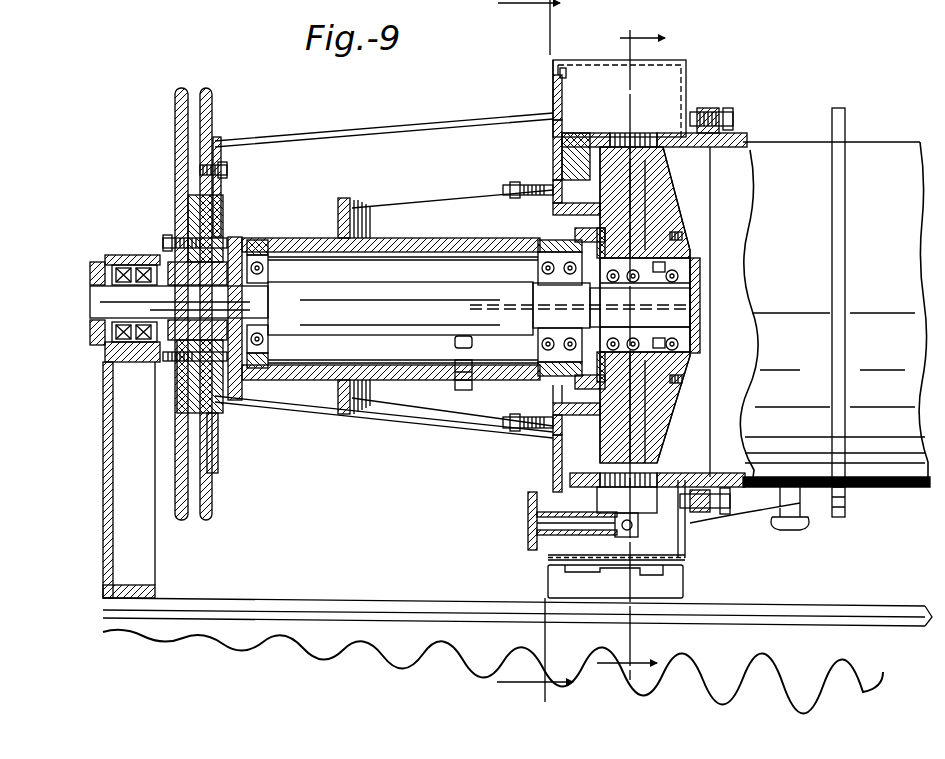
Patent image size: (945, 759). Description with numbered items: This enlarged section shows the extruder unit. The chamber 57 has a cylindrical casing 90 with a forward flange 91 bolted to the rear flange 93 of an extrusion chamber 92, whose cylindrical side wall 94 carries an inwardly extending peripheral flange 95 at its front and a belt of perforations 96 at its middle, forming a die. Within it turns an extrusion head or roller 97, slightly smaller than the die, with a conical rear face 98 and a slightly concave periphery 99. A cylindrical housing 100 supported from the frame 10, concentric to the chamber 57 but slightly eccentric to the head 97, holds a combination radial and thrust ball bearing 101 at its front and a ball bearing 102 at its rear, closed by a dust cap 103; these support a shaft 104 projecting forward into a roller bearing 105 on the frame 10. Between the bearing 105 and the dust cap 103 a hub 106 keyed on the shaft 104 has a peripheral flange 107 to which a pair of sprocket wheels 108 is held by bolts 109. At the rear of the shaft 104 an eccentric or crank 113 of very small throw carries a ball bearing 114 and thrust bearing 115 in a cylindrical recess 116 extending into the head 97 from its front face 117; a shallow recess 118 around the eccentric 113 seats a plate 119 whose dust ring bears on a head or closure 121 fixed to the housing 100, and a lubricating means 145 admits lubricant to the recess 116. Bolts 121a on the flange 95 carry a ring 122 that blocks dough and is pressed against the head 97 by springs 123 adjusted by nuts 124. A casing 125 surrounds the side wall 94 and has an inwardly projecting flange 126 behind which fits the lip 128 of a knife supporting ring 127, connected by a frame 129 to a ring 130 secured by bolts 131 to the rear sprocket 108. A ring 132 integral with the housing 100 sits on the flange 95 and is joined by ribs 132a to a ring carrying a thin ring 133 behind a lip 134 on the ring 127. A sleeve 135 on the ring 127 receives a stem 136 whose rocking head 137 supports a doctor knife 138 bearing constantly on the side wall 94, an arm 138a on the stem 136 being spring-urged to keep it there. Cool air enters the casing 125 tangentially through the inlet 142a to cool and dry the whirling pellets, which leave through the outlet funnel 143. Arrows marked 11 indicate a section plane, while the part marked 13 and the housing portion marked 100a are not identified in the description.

The frame 10 is at (243, 617).
The frame / section line 11- 11 is at (143, 552).
The housing portion 13 is at (658, 400).
The chamber 57 is at (733, 153).
The cylindrical casing 90 is at (790, 150).
The flange 91 is at (718, 108).
The extrusion chamber 92 is at (702, 187).
The flange 93 is at (704, 108).
The cylindrical side wall 94 is at (674, 134).
The inwardly extending peripheral flange 95 is at (592, 134).
The belt of perforations 96 is at (638, 133).
The extrusion head or roller 97 is at (640, 447).
The conical face 98 is at (672, 420).
The concave periphery 99 is at (662, 167).
The cylindrical housing 100 is at (437, 244).
The tube flange 100a is at (345, 198).
The combination radial and thrust ball bearing 101 is at (282, 234).
The ball bearing 102 is at (553, 242).
The dust cap 103 is at (233, 237).
The shaft 104 is at (415, 322).
The roller bearing 105 is at (118, 262).
The hub 106 is at (168, 268).
The peripheral flange 107 is at (213, 212).
The sprocket wheels 108 is at (205, 108).
The bolts 109 is at (180, 380).
The eccentric or crank 113 is at (699, 297).
The ball bearing 114 is at (690, 254).
The thrust bearing 115 is at (690, 263).
The cylindrical recess 116 is at (670, 361).
The front face 117 is at (540, 463).
The shallow recess 118 is at (695, 211).
The plate 119 is at (553, 398).
The head or closure 121 is at (652, 302).
The bolts 121a is at (545, 180).
The ring 122 is at (548, 208).
The springs 123 is at (533, 443).
The nuts 124 is at (522, 433).
The casing 125 is at (580, 60).
The inwardly projecting flange 126 is at (551, 63).
The knife supporting ring 127 is at (553, 92).
The lip 128 is at (564, 71).
The frame 129 is at (386, 129).
The ring 130 is at (222, 150).
The bolts 131 is at (228, 170).
The ring 132 is at (570, 133).
The ribs 132a is at (400, 210).
The thin ring 133 is at (530, 504).
The lip 134 is at (551, 130).
The sleeve 135 is at (552, 562).
The stem 136 is at (528, 523).
The head 137 is at (632, 538).
The doctor knife 138 is at (636, 500).
The arm 138a is at (527, 492).
The inlet 142a is at (660, 580).
The outlet funnel 143 is at (683, 590).
The lubricating means 145 is at (467, 304).